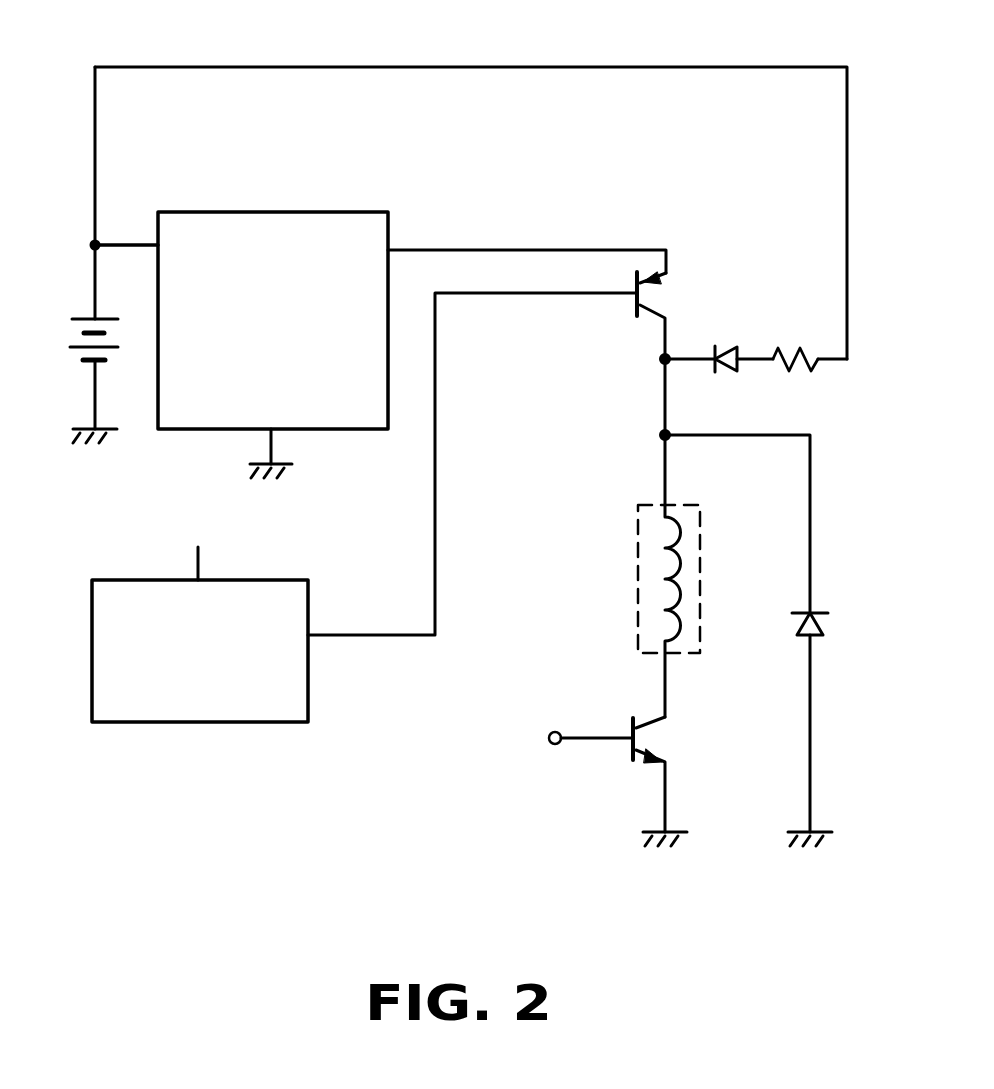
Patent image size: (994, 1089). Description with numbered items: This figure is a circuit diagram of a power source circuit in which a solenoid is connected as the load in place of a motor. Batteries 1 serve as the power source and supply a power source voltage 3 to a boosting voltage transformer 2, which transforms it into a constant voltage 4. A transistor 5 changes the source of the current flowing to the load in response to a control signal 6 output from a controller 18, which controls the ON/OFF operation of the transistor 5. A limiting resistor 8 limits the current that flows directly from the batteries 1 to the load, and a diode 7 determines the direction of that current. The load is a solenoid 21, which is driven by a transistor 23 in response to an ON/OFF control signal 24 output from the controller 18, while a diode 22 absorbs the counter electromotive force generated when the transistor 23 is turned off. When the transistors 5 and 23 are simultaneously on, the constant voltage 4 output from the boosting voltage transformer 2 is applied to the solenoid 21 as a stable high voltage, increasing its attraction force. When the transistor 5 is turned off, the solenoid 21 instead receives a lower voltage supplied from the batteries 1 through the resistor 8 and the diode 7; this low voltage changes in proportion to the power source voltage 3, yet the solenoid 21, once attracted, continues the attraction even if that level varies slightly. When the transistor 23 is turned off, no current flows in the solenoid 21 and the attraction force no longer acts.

The batteries 1 is at (70, 332).
The boosting voltage transformer 2 is at (270, 212).
The power source voltage 3 is at (158, 245).
The constant voltage 4 is at (390, 247).
The transistor 5 is at (648, 290).
The control signal 6 is at (560, 296).
The diode 7 is at (718, 347).
The limiting resistor 8 is at (795, 347).
The controller 18 is at (238, 723).
The solenoid 21 is at (636, 576).
The diode 22 is at (820, 622).
The transistor 23 is at (652, 733).
The ON/OFF control signal 24 is at (553, 732).